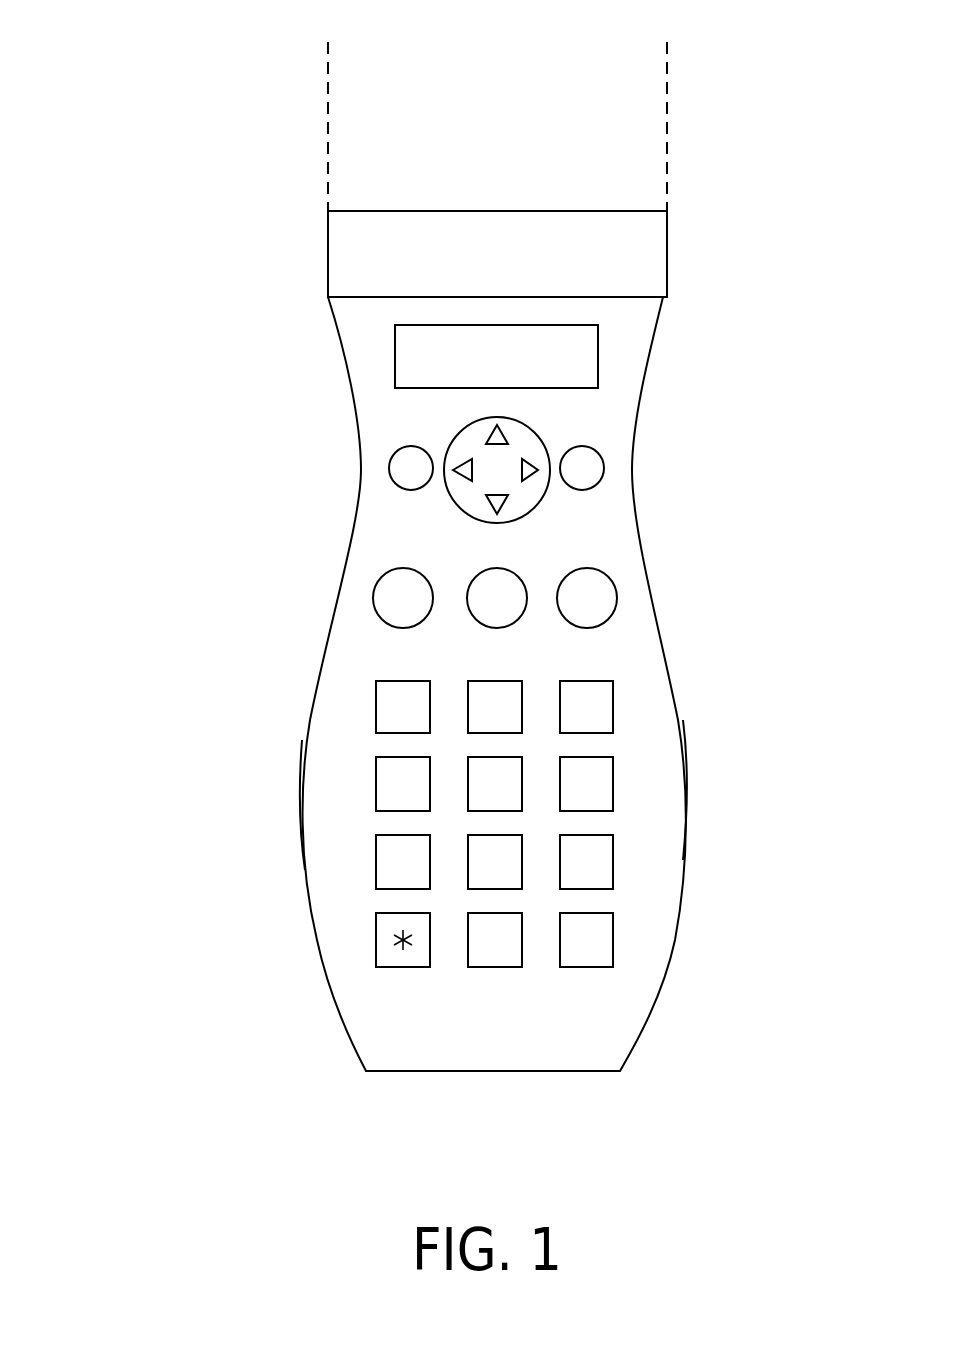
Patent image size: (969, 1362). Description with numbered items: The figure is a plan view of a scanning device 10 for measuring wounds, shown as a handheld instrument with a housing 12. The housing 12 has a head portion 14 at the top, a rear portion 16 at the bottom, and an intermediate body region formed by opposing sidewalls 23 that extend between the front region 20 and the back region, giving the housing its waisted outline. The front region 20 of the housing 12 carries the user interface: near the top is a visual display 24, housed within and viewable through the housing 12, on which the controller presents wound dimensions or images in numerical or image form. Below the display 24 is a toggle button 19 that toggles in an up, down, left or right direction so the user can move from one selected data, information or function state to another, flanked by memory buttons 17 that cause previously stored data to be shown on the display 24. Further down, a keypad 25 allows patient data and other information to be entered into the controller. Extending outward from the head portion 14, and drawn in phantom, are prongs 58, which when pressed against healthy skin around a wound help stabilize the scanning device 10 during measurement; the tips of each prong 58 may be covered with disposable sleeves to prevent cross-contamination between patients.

The scanning device 10 is at (182, 296).
The housing 12 is at (637, 543).
The head portion 14 is at (370, 243).
The rear portion 16 is at (517, 1072).
The memory buttons 17 is at (408, 465).
The toggle button 19 is at (528, 450).
The front region 20 is at (507, 824).
The opposing sidewalls 23 is at (302, 789).
The visual display 24 is at (580, 358).
The keypad 25 is at (607, 853).
The prongs 58 is at (325, 108).